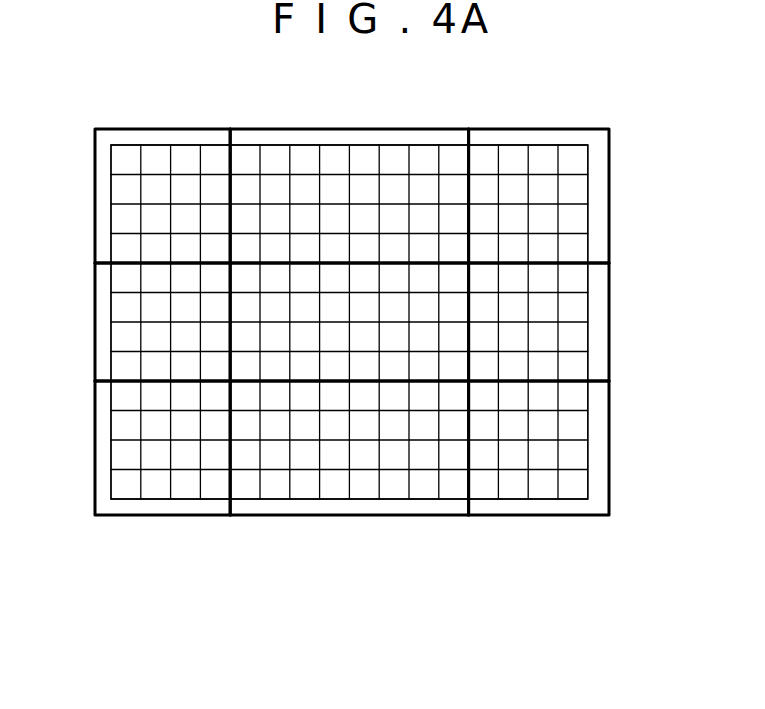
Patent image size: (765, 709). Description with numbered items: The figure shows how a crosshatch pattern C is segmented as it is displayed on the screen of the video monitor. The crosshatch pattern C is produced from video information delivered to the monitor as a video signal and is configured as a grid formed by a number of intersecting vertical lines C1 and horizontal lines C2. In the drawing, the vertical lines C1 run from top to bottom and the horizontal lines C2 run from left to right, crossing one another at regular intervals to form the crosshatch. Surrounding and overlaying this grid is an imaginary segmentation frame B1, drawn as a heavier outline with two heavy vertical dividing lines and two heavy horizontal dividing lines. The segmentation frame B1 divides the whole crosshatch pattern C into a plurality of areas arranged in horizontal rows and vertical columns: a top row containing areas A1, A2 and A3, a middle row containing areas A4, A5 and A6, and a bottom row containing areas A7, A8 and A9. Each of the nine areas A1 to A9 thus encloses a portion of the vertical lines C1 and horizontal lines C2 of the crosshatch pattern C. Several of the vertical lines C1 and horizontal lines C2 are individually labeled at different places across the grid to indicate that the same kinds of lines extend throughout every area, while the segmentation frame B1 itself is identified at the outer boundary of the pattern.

The area A1 is at (162, 196).
The area A2 is at (349, 196).
The area A3 is at (539, 196).
The area A4 is at (162, 322).
The area A5 is at (349, 322).
The area A6 is at (539, 322).
The area A7 is at (162, 448).
The area A8 is at (349, 448).
The area A9 is at (539, 448).
The crosshatch pattern C is at (597, 229).
The vertical lines C1 is at (110, 218).
The horizontal lines C2 is at (364, 145).
The segmentation frame B1 is at (609, 468).